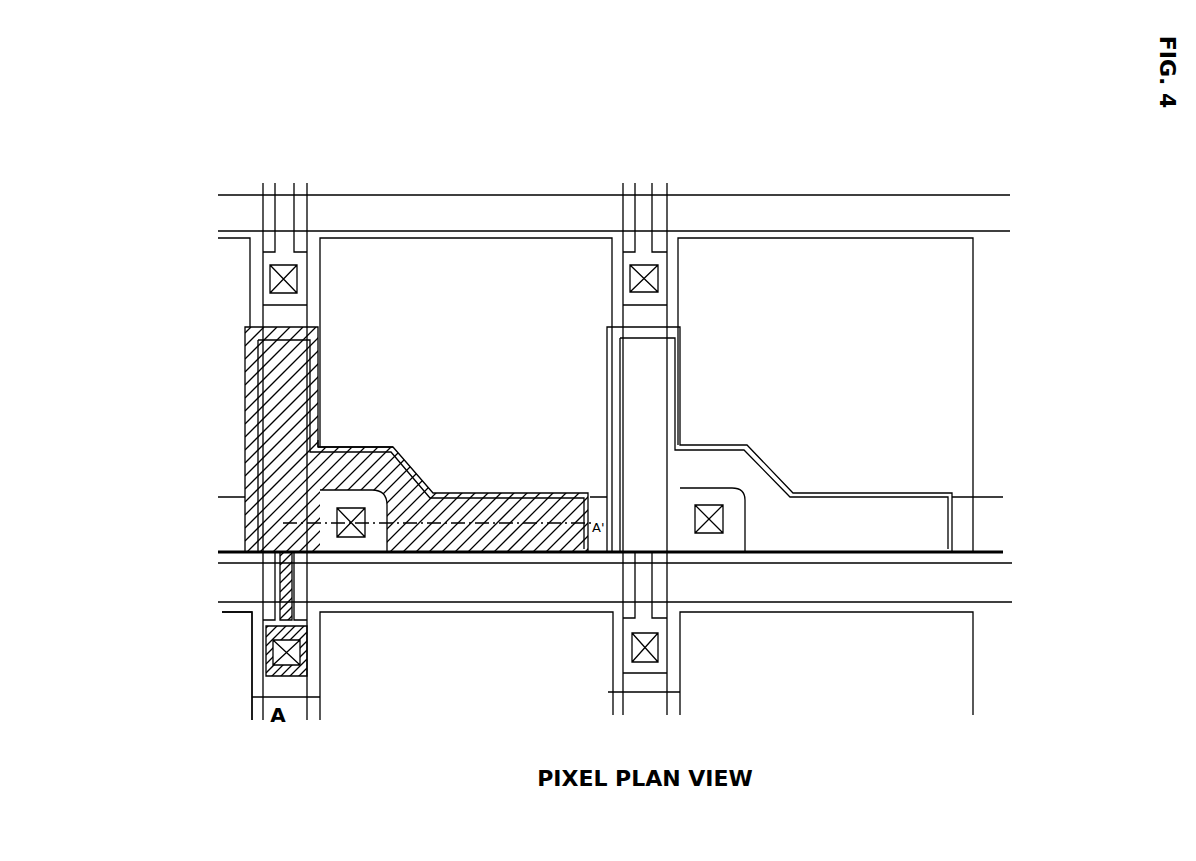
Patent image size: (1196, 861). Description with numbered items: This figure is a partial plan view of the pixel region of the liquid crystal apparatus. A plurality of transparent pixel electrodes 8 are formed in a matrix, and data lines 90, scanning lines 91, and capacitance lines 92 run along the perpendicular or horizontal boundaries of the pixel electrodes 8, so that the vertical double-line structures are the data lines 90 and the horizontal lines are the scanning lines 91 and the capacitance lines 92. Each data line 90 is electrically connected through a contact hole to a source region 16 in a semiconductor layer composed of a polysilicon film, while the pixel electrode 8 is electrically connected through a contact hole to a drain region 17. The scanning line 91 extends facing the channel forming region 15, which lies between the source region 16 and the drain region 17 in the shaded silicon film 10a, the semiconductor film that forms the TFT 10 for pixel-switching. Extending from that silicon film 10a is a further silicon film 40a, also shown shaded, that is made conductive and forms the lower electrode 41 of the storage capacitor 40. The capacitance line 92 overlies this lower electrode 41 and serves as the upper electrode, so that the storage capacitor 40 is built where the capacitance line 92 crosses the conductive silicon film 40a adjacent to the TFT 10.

The pixel electrode 8 is at (531, 297).
The TFT 10 is at (236, 637).
The silicon film 10a is at (387, 556).
The channel forming region 15 is at (275, 583).
The source region 16 is at (310, 672).
The drain region 17 is at (313, 450).
The storage capacitor 40 is at (512, 485).
The silicon film 40a is at (583, 417).
The lower electrode 41 is at (467, 493).
The data line 90 is at (262, 174).
The scanning line 91 is at (1030, 195).
The capacitance line 92 is at (1005, 498).